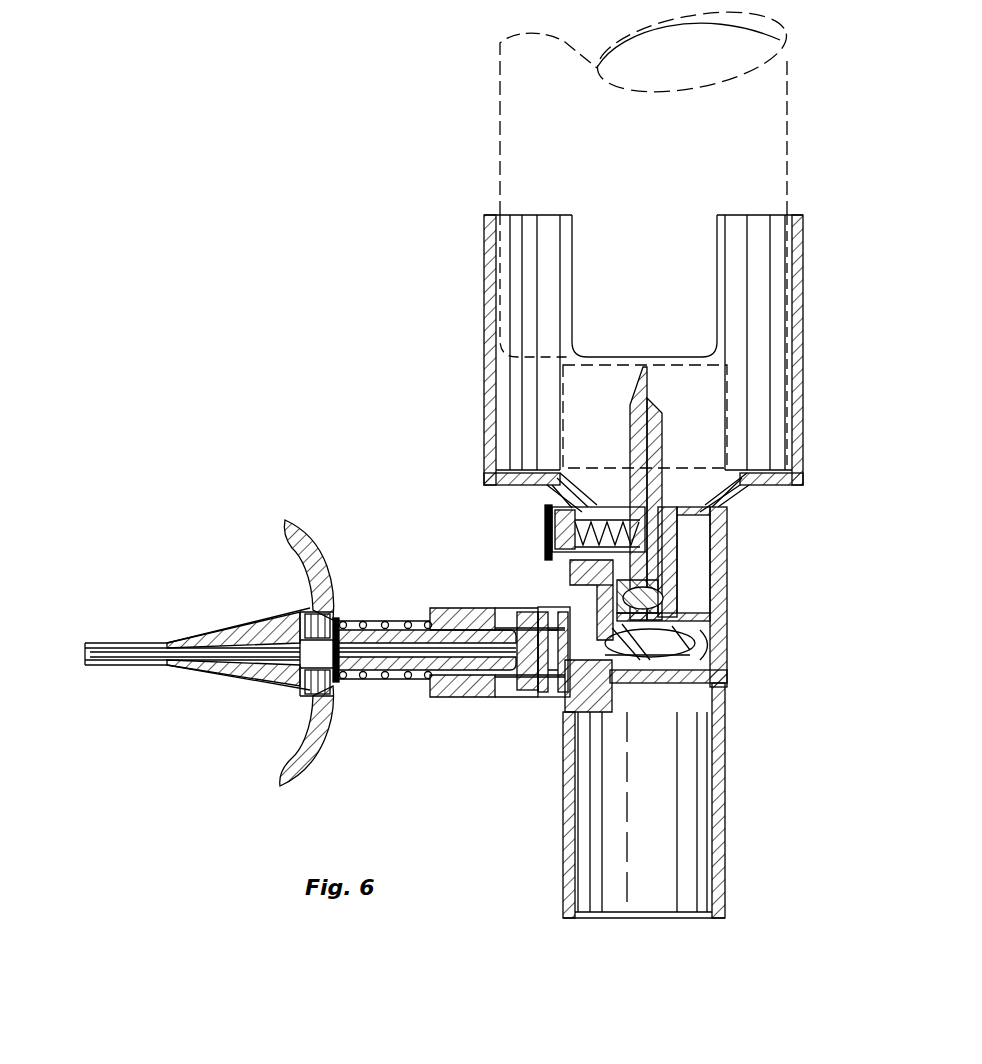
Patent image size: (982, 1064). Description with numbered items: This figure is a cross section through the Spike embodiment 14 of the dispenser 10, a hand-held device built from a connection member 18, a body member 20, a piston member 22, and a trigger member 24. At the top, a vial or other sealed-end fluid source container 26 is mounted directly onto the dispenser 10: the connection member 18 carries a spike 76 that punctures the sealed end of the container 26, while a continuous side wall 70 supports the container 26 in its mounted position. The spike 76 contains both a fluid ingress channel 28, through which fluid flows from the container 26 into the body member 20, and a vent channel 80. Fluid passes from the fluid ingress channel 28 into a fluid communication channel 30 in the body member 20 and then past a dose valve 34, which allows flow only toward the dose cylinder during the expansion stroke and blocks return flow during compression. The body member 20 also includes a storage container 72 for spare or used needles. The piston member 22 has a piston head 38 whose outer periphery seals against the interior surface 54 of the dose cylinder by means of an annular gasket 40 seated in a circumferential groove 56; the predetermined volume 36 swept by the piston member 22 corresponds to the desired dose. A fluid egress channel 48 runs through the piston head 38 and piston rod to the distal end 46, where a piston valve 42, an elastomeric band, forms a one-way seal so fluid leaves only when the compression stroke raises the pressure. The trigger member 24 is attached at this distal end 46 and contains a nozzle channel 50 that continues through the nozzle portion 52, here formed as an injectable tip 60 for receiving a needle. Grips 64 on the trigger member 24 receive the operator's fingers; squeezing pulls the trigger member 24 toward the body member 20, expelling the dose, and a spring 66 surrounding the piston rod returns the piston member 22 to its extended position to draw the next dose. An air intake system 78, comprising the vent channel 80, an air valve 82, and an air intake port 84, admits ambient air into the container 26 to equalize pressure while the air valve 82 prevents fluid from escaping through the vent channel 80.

The dispenser 10 is at (465, 459).
The Spike embodiment 14 is at (617, 617).
The connection member 18 is at (677, 310).
The body member 20 is at (593, 800).
The piston member 22 is at (449, 682).
The trigger member 24 is at (182, 649).
The fluid source container 26 is at (792, 140).
The fluid ingress channel 28 is at (662, 400).
The fluid communication channel 30 is at (655, 585).
The dose valve 34 is at (708, 686).
The predetermined volume 36 is at (568, 607).
The piston head 38 is at (523, 735).
The annular gasket 40 is at (560, 607).
The piston valve 42 is at (318, 640).
The distal end 46 is at (338, 700).
The fluid egress channel 48 is at (396, 656).
The nozzle channel 50 is at (61, 616).
The nozzle portion 52 is at (141, 737).
The interior surface 54 is at (565, 692).
The circumferential groove 56 is at (525, 692).
The injectable tip 60 is at (114, 641).
The grips 64 is at (288, 542).
The spring 66 is at (372, 622).
The continuous side wall 70 is at (805, 330).
The storage container 72 is at (665, 805).
The spike 76 is at (606, 188).
The air intake system 78 is at (499, 543).
The vent channel 80 is at (618, 315).
The air valve 82 is at (613, 504).
The air intake port 84 is at (545, 548).